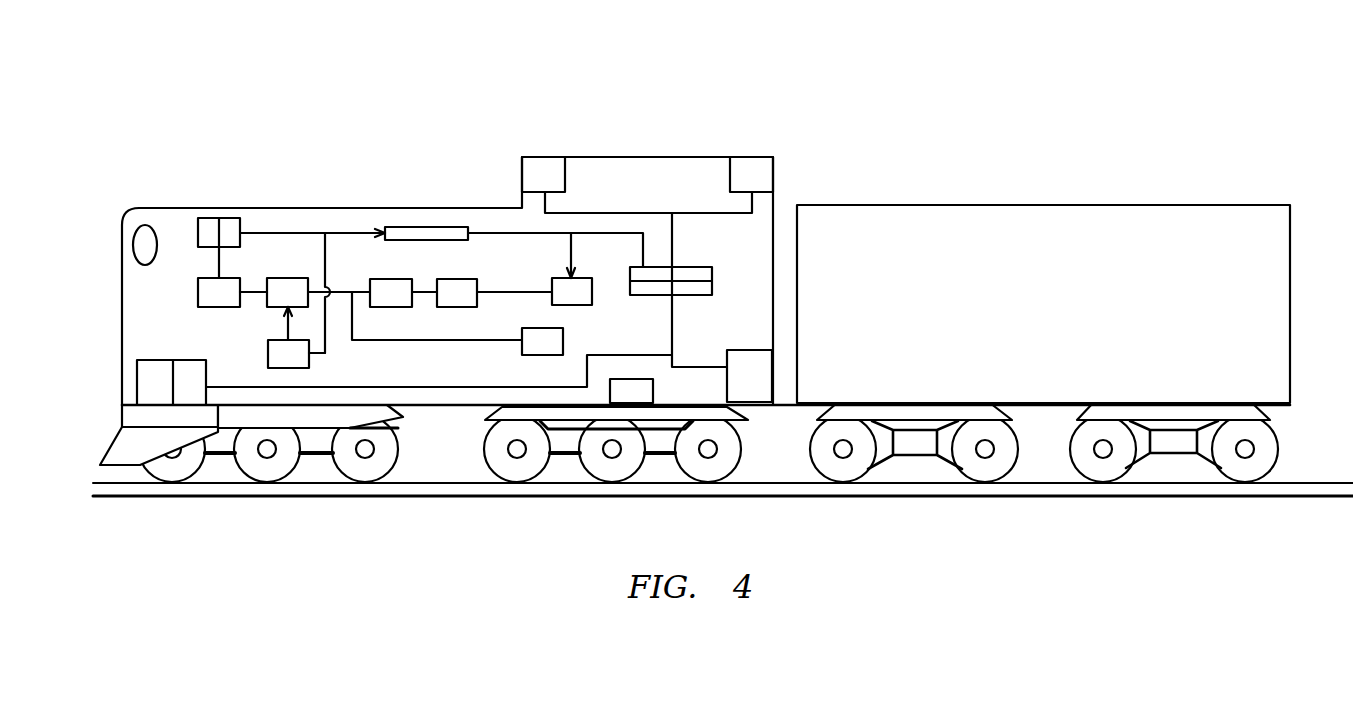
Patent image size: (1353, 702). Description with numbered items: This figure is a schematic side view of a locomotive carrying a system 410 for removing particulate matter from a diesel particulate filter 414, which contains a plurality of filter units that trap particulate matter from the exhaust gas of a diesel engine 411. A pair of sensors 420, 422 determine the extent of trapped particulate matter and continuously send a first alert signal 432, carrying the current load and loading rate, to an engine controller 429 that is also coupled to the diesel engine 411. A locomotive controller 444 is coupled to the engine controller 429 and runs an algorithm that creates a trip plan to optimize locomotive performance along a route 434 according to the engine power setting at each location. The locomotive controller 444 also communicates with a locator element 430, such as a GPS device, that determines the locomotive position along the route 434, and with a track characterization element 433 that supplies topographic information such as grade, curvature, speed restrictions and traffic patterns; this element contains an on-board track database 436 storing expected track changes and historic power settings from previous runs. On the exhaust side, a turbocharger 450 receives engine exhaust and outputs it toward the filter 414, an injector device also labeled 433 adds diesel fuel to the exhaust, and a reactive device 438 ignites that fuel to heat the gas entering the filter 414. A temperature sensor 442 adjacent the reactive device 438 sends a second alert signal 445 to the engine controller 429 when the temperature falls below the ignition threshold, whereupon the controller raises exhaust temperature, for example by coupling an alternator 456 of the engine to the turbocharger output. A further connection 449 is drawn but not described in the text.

The system 410 is at (806, 84).
The diesel engine 411 is at (575, 310).
The diesel particulate filter 414 is at (198, 287).
The sensor 420 is at (197, 228).
The sensor 422 is at (228, 218).
The engine controller 429 is at (445, 227).
The locator element 430 is at (755, 155).
The first alert signal 432 is at (355, 232).
The track characterization element 433 is at (753, 373).
The route 434 is at (557, 497).
The on-board track database 436 is at (182, 360).
The reactive device 438 is at (272, 312).
The temperature sensor 442 is at (310, 365).
The locomotive controller 444 is at (712, 272).
The second alert signal 445 is at (325, 253).
The link 449 is at (550, 235).
The turbocharger 450 is at (463, 278).
The alternator 456 is at (533, 357).